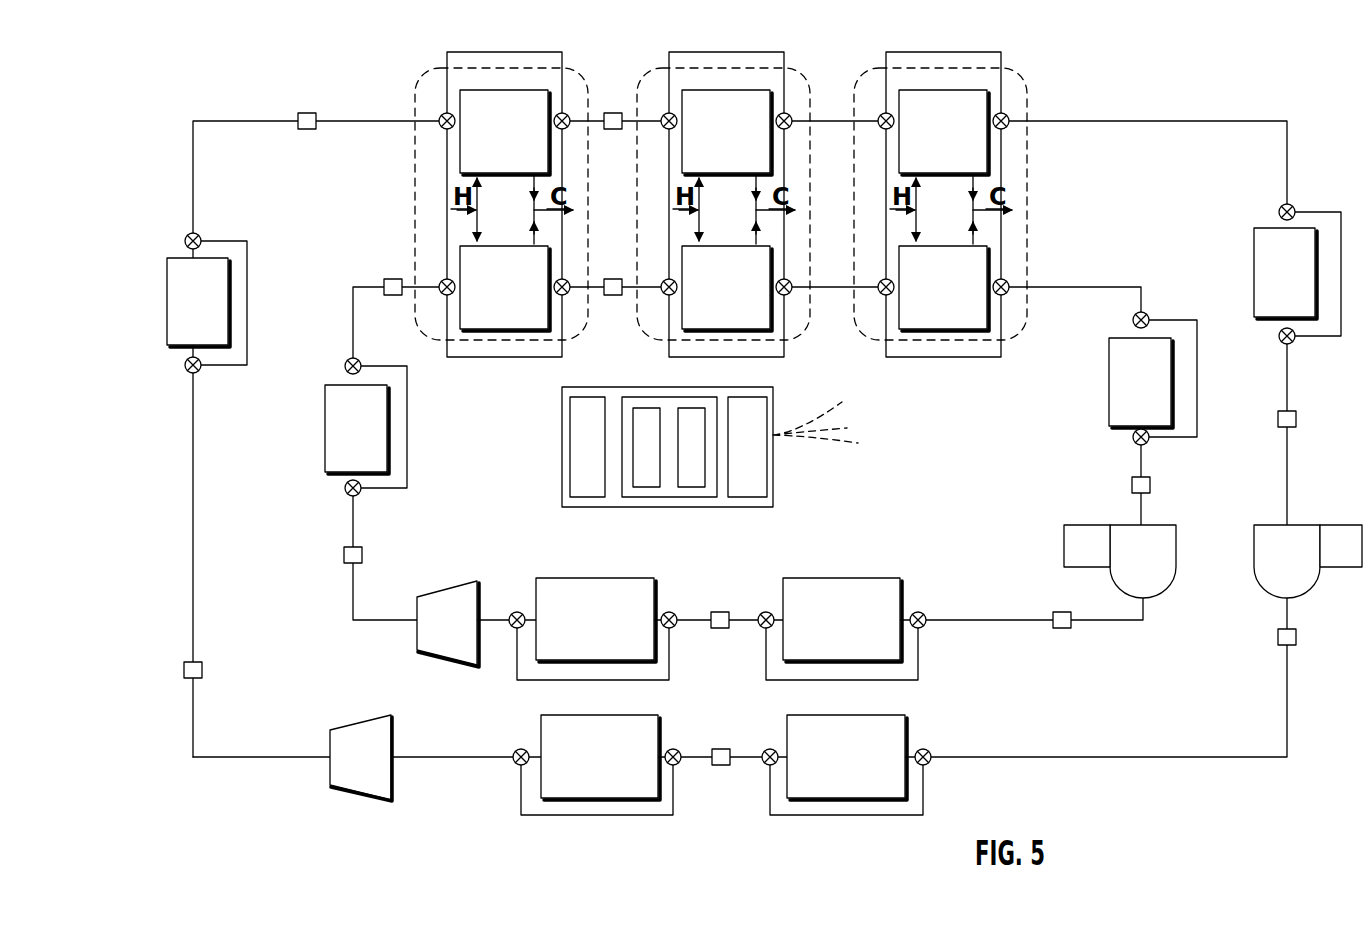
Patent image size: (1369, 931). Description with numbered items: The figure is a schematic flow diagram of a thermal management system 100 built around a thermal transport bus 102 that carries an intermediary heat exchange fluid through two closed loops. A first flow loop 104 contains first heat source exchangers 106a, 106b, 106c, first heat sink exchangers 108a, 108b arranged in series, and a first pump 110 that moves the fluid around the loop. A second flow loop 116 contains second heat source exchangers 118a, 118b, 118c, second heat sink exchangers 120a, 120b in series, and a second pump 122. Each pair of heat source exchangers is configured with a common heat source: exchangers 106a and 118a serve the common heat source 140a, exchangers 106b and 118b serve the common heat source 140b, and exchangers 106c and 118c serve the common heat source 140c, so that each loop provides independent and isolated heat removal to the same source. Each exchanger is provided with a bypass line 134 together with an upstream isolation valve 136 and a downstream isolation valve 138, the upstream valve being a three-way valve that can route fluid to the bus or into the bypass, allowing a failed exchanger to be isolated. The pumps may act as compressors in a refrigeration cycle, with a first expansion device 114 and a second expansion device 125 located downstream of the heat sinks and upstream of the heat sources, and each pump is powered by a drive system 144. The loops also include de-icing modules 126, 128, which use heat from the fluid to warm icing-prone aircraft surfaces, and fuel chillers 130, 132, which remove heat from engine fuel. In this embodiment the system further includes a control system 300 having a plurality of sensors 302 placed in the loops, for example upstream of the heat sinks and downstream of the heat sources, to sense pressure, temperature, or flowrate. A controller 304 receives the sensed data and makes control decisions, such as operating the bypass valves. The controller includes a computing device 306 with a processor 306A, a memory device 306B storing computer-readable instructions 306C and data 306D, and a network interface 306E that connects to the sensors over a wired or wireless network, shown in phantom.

The thermal management system 100 is at (1231, 65).
The thermal transport bus 102 is at (317, 419).
The first flow loop 104 is at (1144, 143).
The first heat source exchanger 106a is at (505, 132).
The additional first heat source exchanger 106b is at (727, 132).
The another first heat source exchanger 106c is at (944, 132).
The first heat sink exchanger 108a is at (600, 757).
The first heat sink exchanger 108b is at (847, 757).
The first pump 110 is at (1170, 561).
The first expansion device 114 is at (361, 734).
The second flow loop 116 is at (1071, 278).
The second heat source exchanger 118a is at (505, 288).
The additional second heat source exchanger 118b is at (727, 288).
The another second heat source exchanger 118c is at (944, 288).
The second heat sink exchanger 120a is at (596, 620).
The second heat sink exchanger 120b is at (842, 620).
The second pump 122 is at (1256, 561).
The second expansion device 125 is at (448, 599).
The de-icing module 126 is at (1254, 271).
The de-icing module 128 is at (1111, 381).
The fuel chiller 130 is at (168, 302).
The fuel chiller 132 is at (327, 429).
The bypass line 134 is at (767, 432).
The upstream isolation valve 136 is at (579, 439).
The downstream isolation valve 138 is at (479, 439).
The common heat source 140a is at (460, 204).
The common heat source 140b is at (738, 190).
The common heat source 140c is at (963, 190).
The drive system 144 is at (1178, 518).
The control system 300 is at (685, 450).
The sensor 302 is at (765, 444).
The controller 304 is at (848, 410).
The computing device 306 is at (669, 450).
The processor 306A is at (591, 476).
The memory device 306B is at (669, 476).
The computer-readable instructions 306C is at (636, 416).
The data 306D is at (708, 478).
The network interface 306E is at (785, 447).